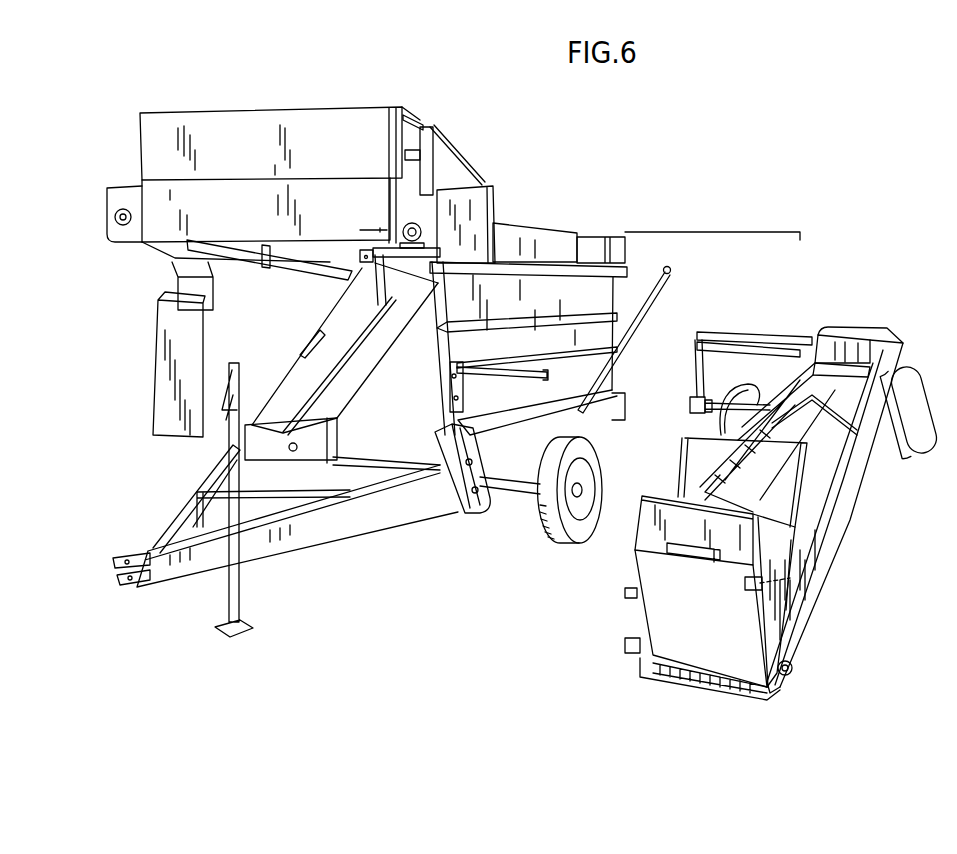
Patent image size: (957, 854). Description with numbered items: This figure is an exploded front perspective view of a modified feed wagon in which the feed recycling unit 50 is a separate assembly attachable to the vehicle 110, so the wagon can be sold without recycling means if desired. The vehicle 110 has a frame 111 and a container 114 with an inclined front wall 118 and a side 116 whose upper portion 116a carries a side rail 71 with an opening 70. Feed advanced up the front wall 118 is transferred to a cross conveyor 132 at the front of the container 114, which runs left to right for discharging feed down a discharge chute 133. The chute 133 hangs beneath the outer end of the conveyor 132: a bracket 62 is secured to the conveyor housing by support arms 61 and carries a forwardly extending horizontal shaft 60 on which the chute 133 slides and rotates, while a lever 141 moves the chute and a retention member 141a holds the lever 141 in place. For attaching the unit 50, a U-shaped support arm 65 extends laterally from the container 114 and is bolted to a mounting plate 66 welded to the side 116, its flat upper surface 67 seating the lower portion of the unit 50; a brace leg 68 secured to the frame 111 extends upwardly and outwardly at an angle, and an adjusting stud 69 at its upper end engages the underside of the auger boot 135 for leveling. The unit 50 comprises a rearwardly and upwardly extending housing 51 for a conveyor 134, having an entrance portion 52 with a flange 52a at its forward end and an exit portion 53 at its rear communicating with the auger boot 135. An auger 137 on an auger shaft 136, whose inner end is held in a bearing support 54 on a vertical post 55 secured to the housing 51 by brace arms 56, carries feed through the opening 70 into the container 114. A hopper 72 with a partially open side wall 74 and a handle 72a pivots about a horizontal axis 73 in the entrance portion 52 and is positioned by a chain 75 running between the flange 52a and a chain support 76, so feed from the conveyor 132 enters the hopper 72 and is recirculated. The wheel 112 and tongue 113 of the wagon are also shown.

The feed recycling unit 50 is at (845, 566).
The housing 51 is at (852, 543).
The entrance portion 52 is at (795, 642).
The flange 52a is at (787, 612).
The exit portion 53 is at (857, 362).
The bearing support 54 is at (688, 404).
The vertical post 55 is at (697, 372).
The brace arms 56 is at (771, 335).
The shaft 60 is at (406, 267).
The support arms 61 is at (388, 203).
The bracket 62 is at (358, 253).
The support arm 65 is at (500, 388).
The mounting plate 66 is at (448, 378).
The upper surface 67 is at (505, 365).
The brace leg 68 is at (648, 314).
The adjusting stud 69 is at (672, 272).
The opening 70 is at (593, 242).
The side rail 71 is at (540, 234).
The hopper 72 is at (660, 600).
The handle 72a is at (672, 553).
The horizontal axis 73 is at (690, 673).
The partially open side wall 74 is at (662, 492).
The chain 75 is at (783, 583).
The chain support 76 is at (745, 583).
The vehicle 110 is at (652, 220).
The frame 111 is at (513, 442).
The wheel 112 is at (545, 542).
The tongue 113 is at (357, 528).
The container 114 is at (608, 378).
The side 116 is at (608, 280).
The upper portion of container side wall 116a is at (552, 276).
The inclined front wall 118 is at (256, 324).
The cross conveyor 132 is at (427, 213).
The discharge chute 133 is at (375, 387).
The conveyor 134 is at (860, 484).
The auger boot 135 is at (897, 453).
The auger shaft 136 is at (722, 405).
The auger 137 is at (712, 422).
The lever 141 is at (282, 273).
The retention member 141a is at (268, 258).